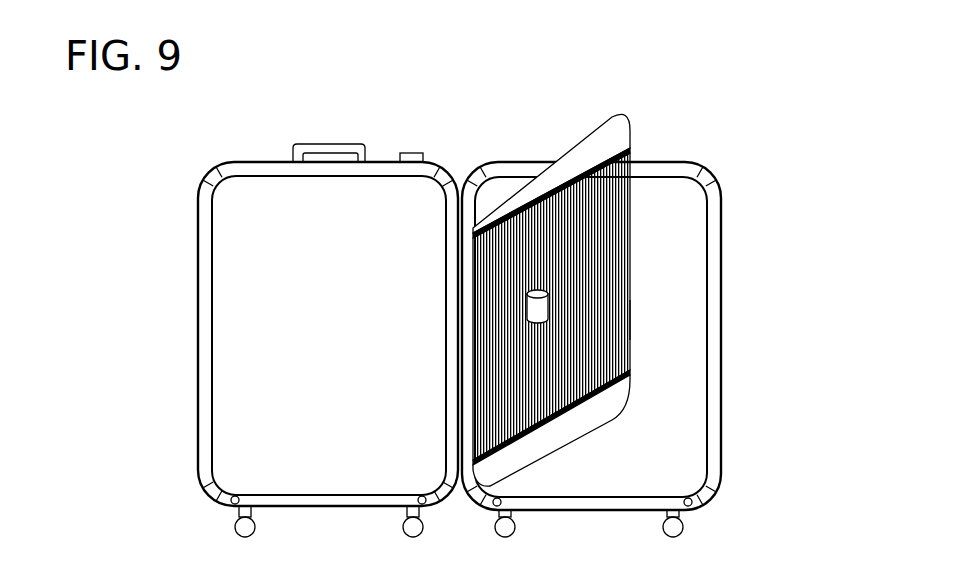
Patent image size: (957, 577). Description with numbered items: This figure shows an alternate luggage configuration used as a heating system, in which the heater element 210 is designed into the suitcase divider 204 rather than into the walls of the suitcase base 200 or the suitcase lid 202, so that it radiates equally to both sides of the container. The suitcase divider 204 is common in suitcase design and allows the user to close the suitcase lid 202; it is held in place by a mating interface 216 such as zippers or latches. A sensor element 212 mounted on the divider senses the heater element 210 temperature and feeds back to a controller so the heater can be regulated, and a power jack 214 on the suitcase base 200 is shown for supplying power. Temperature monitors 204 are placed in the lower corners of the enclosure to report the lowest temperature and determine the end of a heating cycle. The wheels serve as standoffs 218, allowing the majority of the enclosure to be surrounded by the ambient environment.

The suitcase base 200 is at (200, 350).
The suitcase lid 202 is at (763, 490).
The suitcase divider 204 is at (238, 498).
The heater element 210 is at (605, 233).
The sensor element 212 is at (527, 307).
The Power Jack 214 is at (397, 158).
The mating interface 216 is at (633, 321).
The Standoffs 218 is at (228, 515).